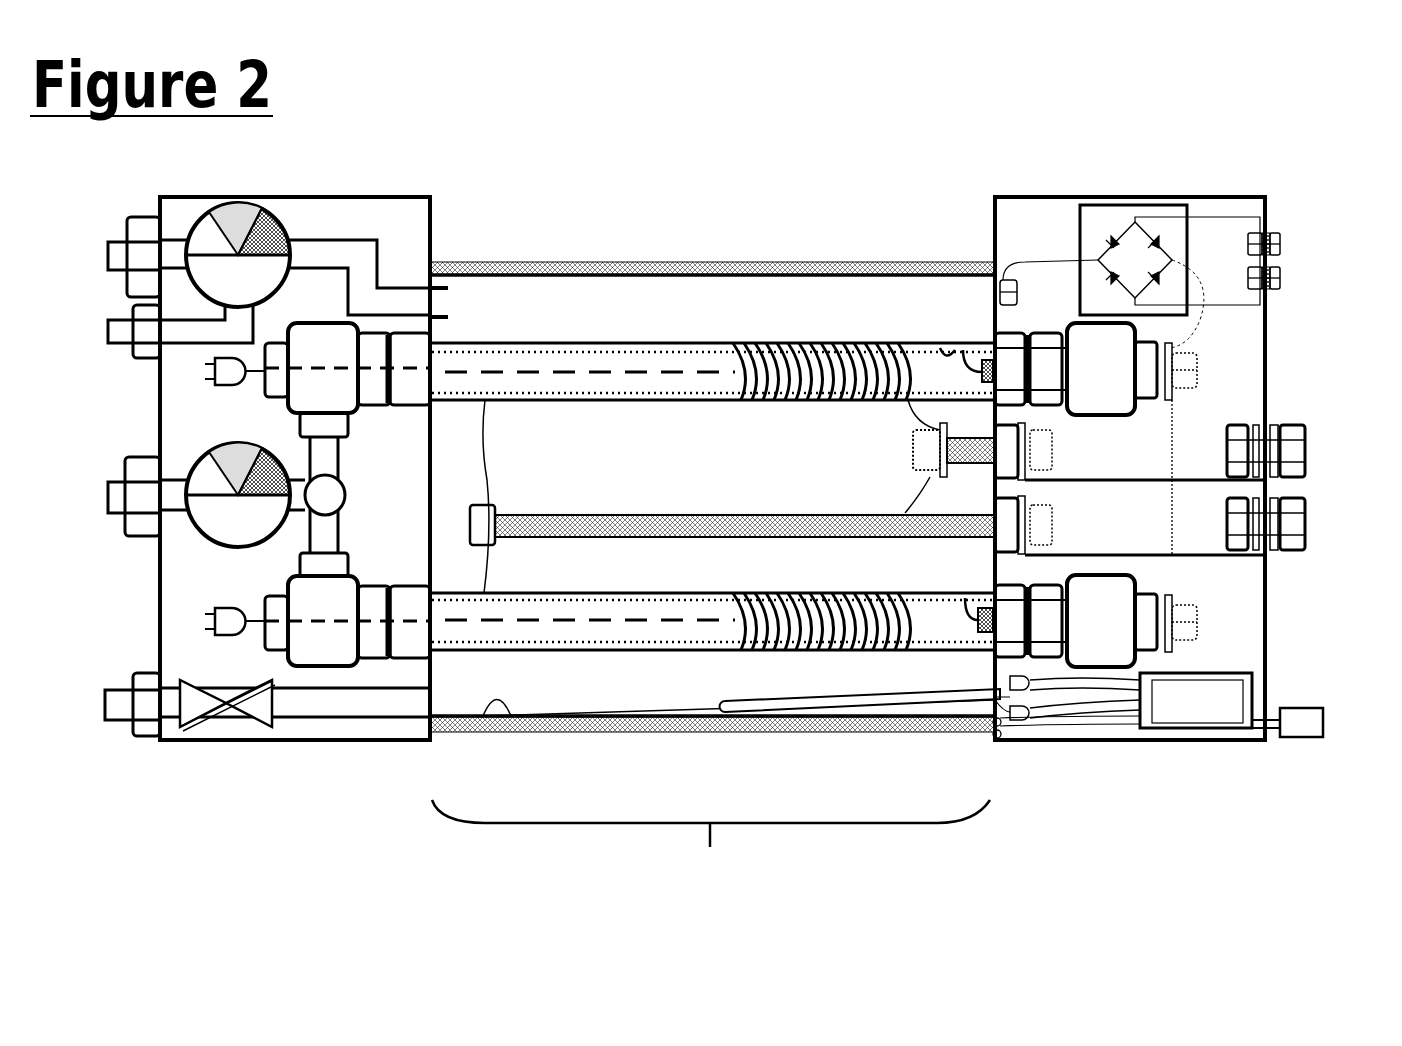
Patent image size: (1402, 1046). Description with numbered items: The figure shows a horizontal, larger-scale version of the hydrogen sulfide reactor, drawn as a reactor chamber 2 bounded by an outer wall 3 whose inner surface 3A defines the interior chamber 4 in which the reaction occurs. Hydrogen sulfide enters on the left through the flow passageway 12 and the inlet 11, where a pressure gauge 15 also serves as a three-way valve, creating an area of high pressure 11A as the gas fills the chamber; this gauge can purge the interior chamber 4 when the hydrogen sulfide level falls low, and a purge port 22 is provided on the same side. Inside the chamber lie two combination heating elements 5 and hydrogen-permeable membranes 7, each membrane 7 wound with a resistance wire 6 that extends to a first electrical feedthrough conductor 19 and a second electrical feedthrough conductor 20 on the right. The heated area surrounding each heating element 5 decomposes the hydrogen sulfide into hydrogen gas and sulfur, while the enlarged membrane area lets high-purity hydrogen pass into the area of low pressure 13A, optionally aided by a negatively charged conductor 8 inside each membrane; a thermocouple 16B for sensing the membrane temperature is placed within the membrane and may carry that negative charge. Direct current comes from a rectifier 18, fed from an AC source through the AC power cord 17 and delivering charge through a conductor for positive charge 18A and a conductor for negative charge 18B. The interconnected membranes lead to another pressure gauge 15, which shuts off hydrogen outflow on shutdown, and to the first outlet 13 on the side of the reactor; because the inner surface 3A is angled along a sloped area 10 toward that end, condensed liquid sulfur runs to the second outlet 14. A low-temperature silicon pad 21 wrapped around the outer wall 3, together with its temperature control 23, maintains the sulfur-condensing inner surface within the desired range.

The reactor chamber 2 is at (711, 837).
The outer wall 3 is at (640, 272).
The inner surface of outer wall 3A is at (695, 283).
The interior chamber 4 is at (713, 305).
The heating element 5 is at (725, 370).
The resistance wire 6 is at (758, 363).
The hydrogen-permeable membrane 7 is at (908, 345).
The negatively charged conductor 8 is at (943, 352).
The sloped area 10 is at (483, 716).
The inlet 11 is at (438, 300).
The area of high pressure 11A is at (502, 304).
The flow passageway 12 is at (108, 258).
The first outlet 13 is at (108, 500).
The area of low pressure 13A is at (540, 363).
The second outlet 14 is at (105, 705).
The pressure gauge 15 is at (240, 243).
The thermocouple for sensing membrane temperature 16B is at (206, 373).
The AC power cord 17 is at (1280, 278).
The rectifier 18 is at (1112, 220).
The conductor for positive charge 18A is at (1027, 258).
The conductor for negative charge 18B is at (1190, 318).
The first electrical feedthrough conductor 19 is at (1305, 450).
The second electrical feedthrough conductor 20 is at (1305, 525).
The silicon pad 21 is at (833, 268).
The purge port 22 is at (108, 333).
The temperature control 23 is at (1300, 723).